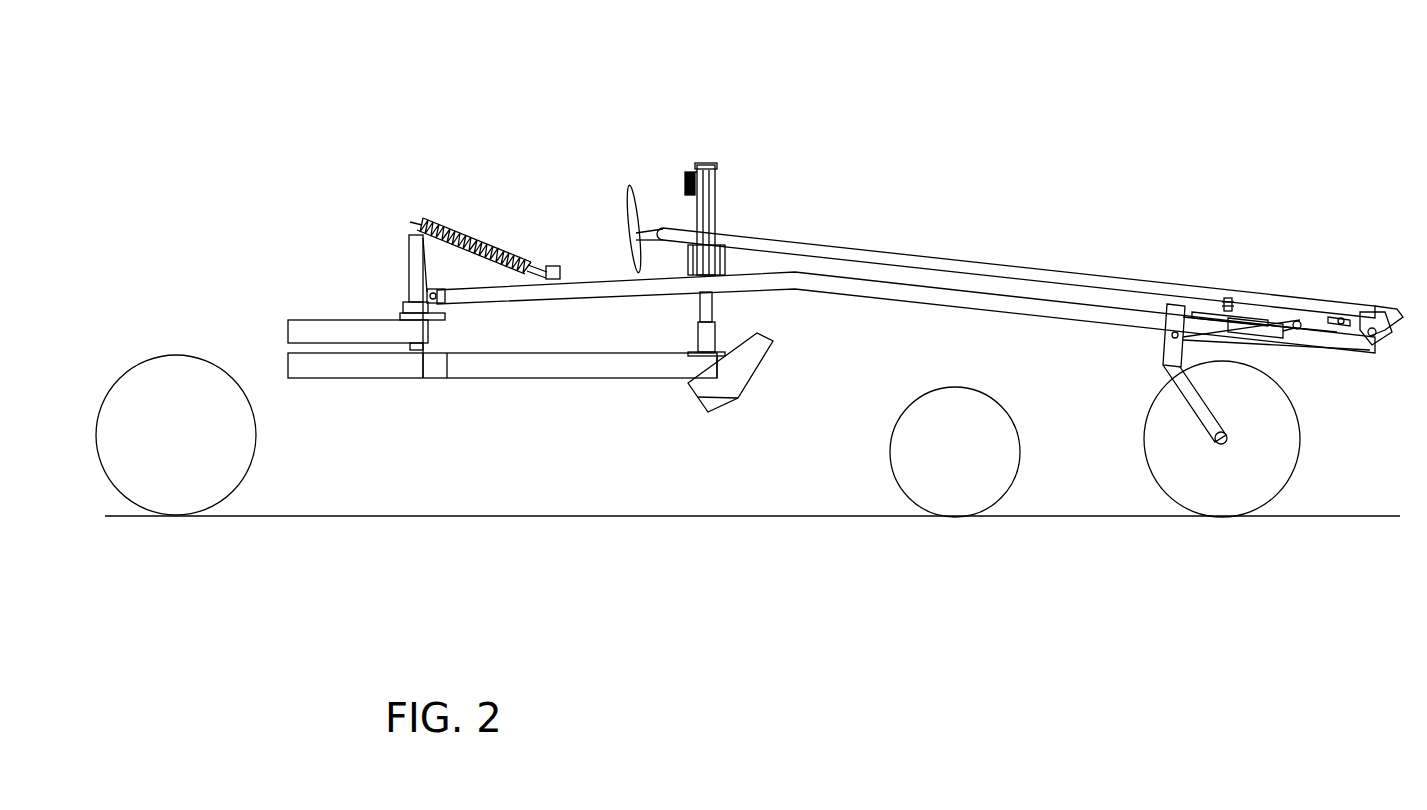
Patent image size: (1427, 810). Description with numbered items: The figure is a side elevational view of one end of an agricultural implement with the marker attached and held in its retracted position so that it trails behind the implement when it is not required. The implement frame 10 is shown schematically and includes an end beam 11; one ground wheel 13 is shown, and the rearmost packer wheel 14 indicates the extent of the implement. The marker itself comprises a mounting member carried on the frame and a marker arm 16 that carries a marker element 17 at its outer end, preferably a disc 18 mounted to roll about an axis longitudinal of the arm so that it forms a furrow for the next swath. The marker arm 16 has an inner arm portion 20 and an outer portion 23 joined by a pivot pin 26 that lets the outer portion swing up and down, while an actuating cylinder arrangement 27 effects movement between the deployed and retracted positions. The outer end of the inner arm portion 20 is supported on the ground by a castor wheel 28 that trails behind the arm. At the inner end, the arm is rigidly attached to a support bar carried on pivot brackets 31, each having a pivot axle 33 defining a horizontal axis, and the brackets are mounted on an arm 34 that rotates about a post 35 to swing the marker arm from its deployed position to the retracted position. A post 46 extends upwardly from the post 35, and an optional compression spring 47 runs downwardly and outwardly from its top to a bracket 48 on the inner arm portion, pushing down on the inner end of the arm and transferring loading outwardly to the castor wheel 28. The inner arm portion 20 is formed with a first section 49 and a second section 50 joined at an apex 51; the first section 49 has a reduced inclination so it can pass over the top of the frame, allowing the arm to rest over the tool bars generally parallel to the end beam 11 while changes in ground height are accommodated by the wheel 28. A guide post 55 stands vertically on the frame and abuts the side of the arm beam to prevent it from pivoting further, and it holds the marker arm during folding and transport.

The frame 10 is at (318, 243).
The end beam 11 is at (482, 378).
The ground wheel 13 is at (248, 456).
The packer wheel 14 is at (910, 448).
The marker arm 16 is at (912, 228).
The marker element 17 is at (627, 165).
The disc 18 is at (630, 208).
The inner arm portion 20 is at (1001, 304).
The outer portion 23 is at (975, 260).
The pivot pin 26 is at (1377, 340).
The actuating cylinder arrangement 27 is at (1293, 285).
The castor wheel 28 is at (1177, 483).
The pivot bracket 31 is at (434, 290).
The pivot axle 33 is at (445, 302).
The arm 34 is at (425, 314).
The post 35 is at (402, 313).
The post 46 is at (402, 246).
The compression spring 47 is at (470, 252).
The bracket 48 is at (553, 266).
The first section 49 is at (745, 284).
The second section 50 is at (946, 298).
The apex 51 is at (796, 284).
The guide post 55 is at (742, 182).